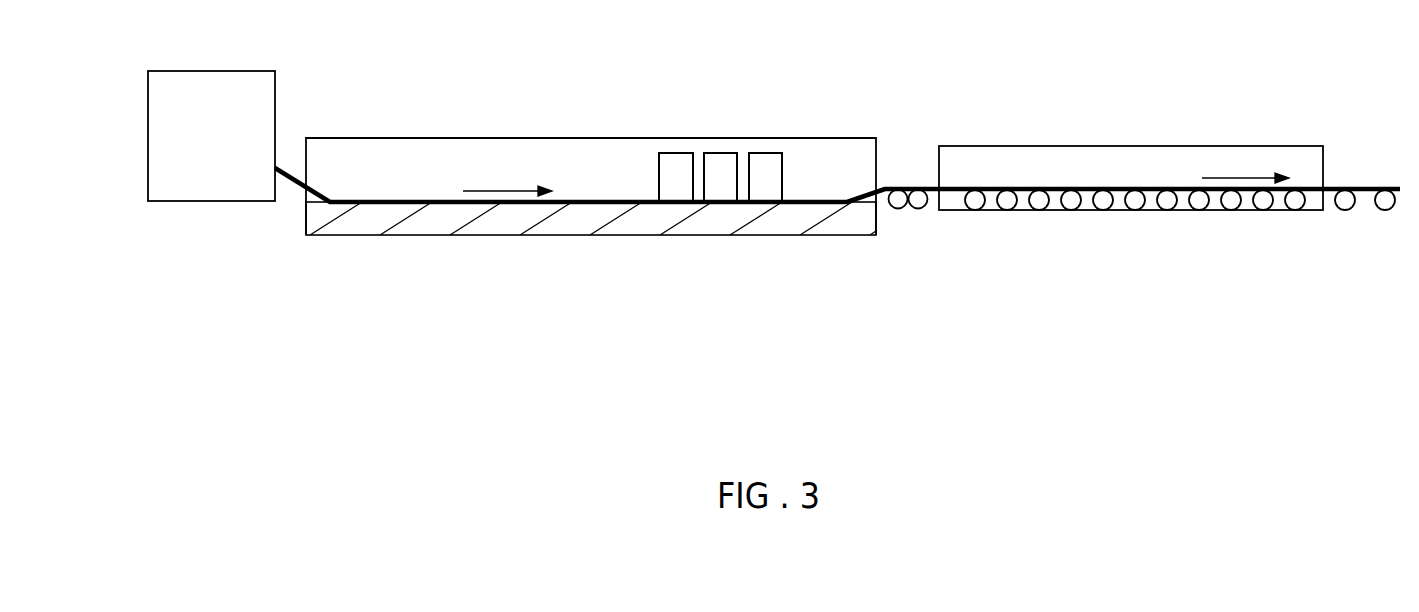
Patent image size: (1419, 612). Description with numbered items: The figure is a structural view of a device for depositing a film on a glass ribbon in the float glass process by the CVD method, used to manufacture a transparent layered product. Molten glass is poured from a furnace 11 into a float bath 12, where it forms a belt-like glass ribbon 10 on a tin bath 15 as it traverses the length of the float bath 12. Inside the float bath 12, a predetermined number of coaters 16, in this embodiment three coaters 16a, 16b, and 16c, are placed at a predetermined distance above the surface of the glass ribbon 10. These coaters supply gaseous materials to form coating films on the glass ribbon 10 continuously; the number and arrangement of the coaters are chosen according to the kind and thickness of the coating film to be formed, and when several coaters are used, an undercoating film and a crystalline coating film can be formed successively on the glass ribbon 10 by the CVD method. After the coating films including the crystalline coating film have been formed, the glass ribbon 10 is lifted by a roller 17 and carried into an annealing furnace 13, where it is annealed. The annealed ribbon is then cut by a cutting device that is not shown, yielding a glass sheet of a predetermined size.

The glass ribbon 10 is at (603, 203).
The furnace 11 is at (220, 177).
The float bath 12 is at (463, 157).
The annealing furnace 13 is at (1127, 165).
The tin bath 15 is at (420, 225).
The coaters 16 is at (709, 258).
The first coater 16a is at (673, 187).
The second coater 16b is at (718, 187).
The third coater 16c is at (763, 187).
The roller 17 is at (898, 203).